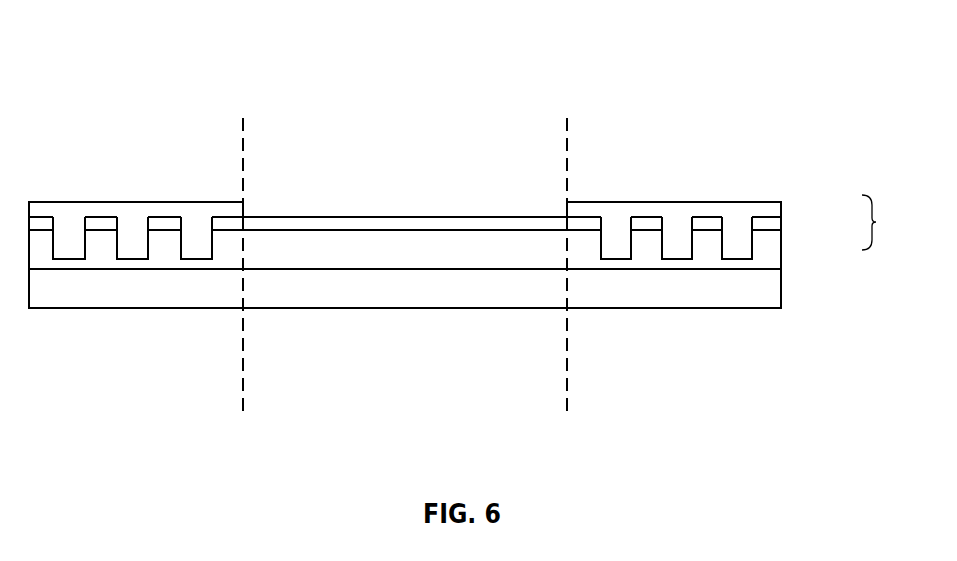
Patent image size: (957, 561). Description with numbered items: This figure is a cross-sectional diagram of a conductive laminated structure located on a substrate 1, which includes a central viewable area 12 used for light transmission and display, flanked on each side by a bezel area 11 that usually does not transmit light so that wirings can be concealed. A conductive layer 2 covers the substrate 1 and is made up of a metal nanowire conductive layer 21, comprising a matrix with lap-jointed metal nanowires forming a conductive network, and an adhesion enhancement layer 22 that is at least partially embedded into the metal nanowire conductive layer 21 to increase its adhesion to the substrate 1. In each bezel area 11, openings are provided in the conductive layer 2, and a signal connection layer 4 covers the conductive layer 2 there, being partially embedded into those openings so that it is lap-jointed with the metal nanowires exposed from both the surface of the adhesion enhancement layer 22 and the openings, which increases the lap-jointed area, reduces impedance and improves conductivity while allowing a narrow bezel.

The substrate 1 is at (444, 288).
The conductive layer 2 is at (879, 222).
The signal connection layer 4 is at (444, 190).
The bezel area 11 is at (144, 132).
The viewable area 12 is at (407, 132).
The metal nanowire conductive layer 21 is at (445, 243).
The adhesion enhancement layer 22 is at (445, 212).